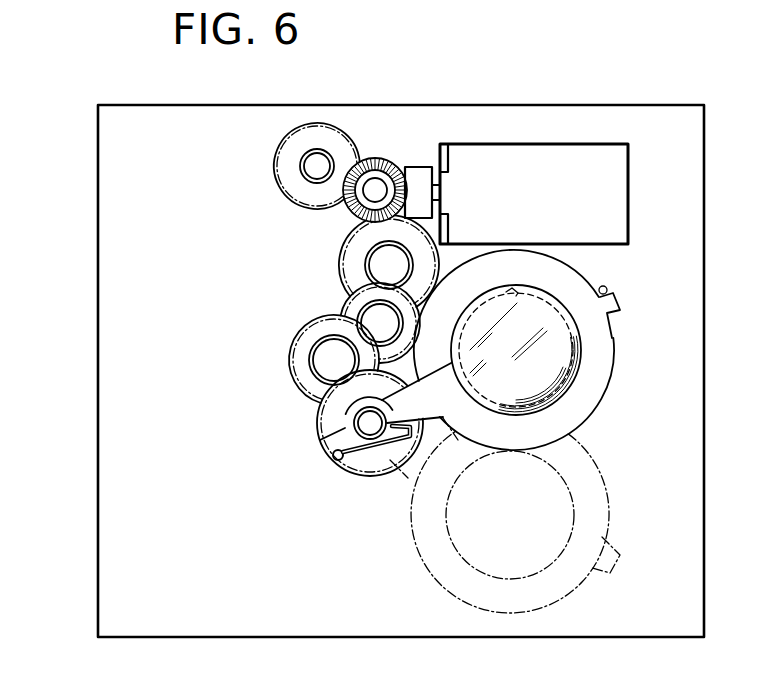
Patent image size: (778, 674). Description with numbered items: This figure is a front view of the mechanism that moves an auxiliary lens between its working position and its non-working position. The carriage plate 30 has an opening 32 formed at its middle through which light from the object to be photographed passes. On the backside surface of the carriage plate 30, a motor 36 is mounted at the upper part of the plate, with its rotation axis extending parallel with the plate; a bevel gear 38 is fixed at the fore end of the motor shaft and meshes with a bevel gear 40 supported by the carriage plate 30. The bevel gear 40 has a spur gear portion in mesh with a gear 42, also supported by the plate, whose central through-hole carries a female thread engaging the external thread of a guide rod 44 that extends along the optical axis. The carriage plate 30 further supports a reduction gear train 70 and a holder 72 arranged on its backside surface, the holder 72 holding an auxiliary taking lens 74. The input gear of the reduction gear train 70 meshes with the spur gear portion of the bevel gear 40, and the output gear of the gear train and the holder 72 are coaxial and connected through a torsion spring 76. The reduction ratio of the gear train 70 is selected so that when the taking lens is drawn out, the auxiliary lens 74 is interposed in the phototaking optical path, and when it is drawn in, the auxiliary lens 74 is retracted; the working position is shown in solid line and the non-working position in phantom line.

The carriage plate 30 is at (97, 136).
The opening 32 is at (515, 289).
The motor 36 is at (548, 205).
The bevel gear 38 is at (421, 168).
The bevel gear 40 is at (380, 160).
The gear 42 is at (275, 152).
The guide rod 44 is at (300, 167).
The reduction gear train 70 is at (326, 292).
The holder 72 is at (614, 336).
The auxiliary taking lens 74 is at (575, 368).
The torsion spring 76 is at (344, 463).